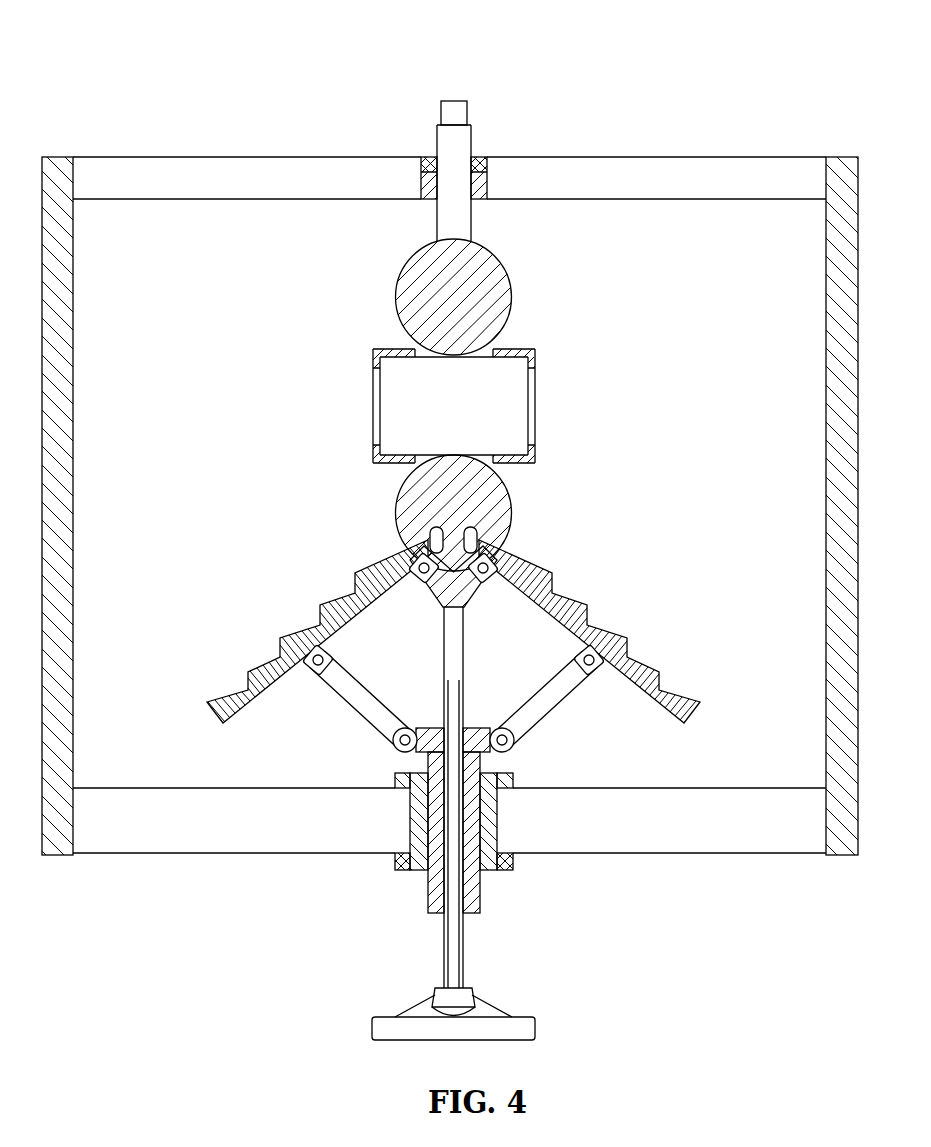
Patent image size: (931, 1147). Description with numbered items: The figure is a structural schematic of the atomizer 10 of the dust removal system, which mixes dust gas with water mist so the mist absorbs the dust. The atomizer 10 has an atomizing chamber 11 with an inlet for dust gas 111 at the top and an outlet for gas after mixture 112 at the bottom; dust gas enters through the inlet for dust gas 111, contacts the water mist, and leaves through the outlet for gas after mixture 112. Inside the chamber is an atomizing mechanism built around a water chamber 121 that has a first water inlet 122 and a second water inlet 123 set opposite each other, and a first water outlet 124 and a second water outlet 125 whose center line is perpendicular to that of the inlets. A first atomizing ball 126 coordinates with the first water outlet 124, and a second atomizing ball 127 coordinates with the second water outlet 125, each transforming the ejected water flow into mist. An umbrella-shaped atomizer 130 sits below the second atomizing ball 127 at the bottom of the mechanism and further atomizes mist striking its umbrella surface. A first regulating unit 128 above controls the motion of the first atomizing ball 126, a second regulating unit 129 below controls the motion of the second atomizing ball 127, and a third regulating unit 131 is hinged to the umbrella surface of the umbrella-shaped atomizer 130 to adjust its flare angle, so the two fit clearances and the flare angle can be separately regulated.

The atomizer 10 is at (466, 27).
The atomizing chamber 11 is at (68, 265).
The inlet for dust gas 111 is at (207, 165).
The outlet for gas after mixture 112 is at (612, 823).
The water chamber 121 is at (330, 345).
The first water inlet 122 is at (355, 398).
The second water inlet 123 is at (520, 400).
The first water outlet 124 is at (520, 362).
The second water outlet 125 is at (512, 444).
The first atomizing ball 126 is at (493, 267).
The second atomizing ball 127 is at (493, 497).
The first regulating unit 128 is at (470, 140).
The second regulating unit 129 is at (470, 677).
The umbrella-shaped atomizer 130 is at (590, 597).
The third regulating unit 131 is at (323, 678).